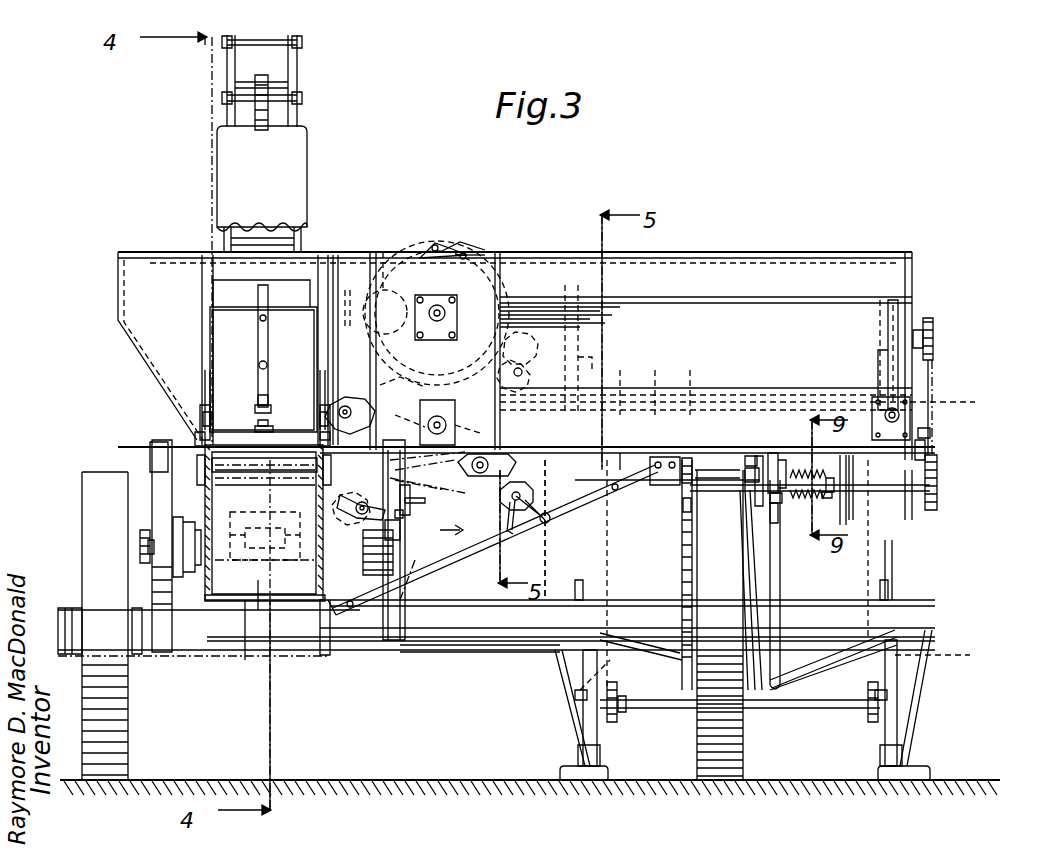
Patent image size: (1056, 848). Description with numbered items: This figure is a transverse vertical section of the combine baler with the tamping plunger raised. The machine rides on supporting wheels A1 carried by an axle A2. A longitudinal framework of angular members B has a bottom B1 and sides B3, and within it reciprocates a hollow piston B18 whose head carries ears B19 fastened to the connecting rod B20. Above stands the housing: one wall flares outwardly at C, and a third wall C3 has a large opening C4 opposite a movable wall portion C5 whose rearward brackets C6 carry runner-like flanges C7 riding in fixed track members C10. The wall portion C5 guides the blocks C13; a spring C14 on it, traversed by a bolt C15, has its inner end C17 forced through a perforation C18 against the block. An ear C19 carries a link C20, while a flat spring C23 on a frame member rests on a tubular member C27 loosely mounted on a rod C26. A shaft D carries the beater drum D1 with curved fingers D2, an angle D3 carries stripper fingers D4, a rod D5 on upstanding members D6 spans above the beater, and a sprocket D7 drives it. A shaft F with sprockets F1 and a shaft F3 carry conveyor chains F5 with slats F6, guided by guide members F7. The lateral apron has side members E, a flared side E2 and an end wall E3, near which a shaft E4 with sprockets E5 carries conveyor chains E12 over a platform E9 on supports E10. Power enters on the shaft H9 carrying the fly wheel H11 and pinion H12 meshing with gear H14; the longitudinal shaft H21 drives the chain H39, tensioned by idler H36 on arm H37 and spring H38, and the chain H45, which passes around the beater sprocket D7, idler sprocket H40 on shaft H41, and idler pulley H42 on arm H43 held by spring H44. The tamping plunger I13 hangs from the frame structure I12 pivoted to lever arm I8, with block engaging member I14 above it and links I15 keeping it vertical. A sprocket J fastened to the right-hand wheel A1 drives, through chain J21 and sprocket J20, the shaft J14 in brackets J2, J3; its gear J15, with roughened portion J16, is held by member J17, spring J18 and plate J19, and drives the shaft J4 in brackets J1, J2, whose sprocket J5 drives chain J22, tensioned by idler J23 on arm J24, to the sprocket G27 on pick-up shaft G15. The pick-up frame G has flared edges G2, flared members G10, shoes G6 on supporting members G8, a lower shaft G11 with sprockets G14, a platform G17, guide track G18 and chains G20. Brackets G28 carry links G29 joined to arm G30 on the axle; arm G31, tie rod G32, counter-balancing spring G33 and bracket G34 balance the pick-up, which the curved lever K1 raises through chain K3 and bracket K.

The supporting wheel A1 is at (745, 762).
The axle A2 is at (330, 655).
The downwardly depending frame structure I12 is at (232, 62).
The lever arm I8 is at (230, 82).
The link I15 is at (230, 106).
The block engaging member I14 is at (265, 112).
The tamping plunger I13 is at (292, 152).
The flared housing wall C is at (120, 296).
The third housing wall C3 is at (180, 258).
The block C13 is at (308, 262).
The opening C4 is at (318, 262).
The movable wall portion C5 is at (218, 322).
The spring C14 is at (268, 337).
The bolt C15 is at (268, 365).
The inner end of spring C17 is at (268, 393).
The perforation C18 is at (270, 405).
The link C20 is at (270, 420).
The ear C19 is at (272, 428).
The bracket C6 is at (208, 384).
The fixed track member C10 is at (202, 416).
The runner-like flange C7 is at (210, 414).
The flat spring member C23 is at (198, 438).
The rod C26 is at (230, 470).
The tubular member C27 is at (150, 446).
The angular frame member B is at (207, 468).
The side B3 is at (207, 480).
The ear B19 is at (240, 528).
The connecting rod B20 is at (278, 595).
The bottom B1 is at (245, 600).
The piston B18 is at (258, 600).
The fly wheel H11 is at (152, 462).
The shaft H9 is at (140, 546).
The driving pinion H12 is at (392, 650).
The beater shaft D is at (440, 310).
The beater drum D1 is at (440, 262).
The curved finger D2 is at (384, 252).
The angle D3 is at (378, 290).
The stripper finger D4 is at (343, 310).
The rod D5 is at (437, 242).
The upstanding member D6 is at (458, 248).
The beater sprocket D7 is at (472, 252).
The shaft F3 is at (347, 412).
The conveyor chain F5 is at (420, 420).
The slat F6 is at (432, 400).
The guide member F7 is at (468, 400).
The shaft F is at (488, 463).
The sprocket F1 is at (447, 484).
The idler sprocket H40 is at (528, 346).
The shaft H41 is at (534, 370).
The gear H14 is at (415, 470).
The spring H38 is at (425, 500).
The chain H39 is at (412, 505).
The chain H45 is at (470, 527).
The idler H36 is at (400, 535).
The idler arm H37 is at (416, 528).
The longitudinal driving shaft H21 is at (385, 520).
The idler pulley H42 is at (522, 496).
The pivoted arm H43 is at (540, 520).
The spring H44 is at (512, 535).
The flared side member E2 is at (860, 270).
The end wall E3 is at (918, 300).
The shaft E4 is at (895, 415).
The sprocket E5 is at (957, 401).
The platform member E9 is at (627, 380).
The support E10 is at (664, 380).
The conveyor chain E12 is at (623, 472).
The side member E is at (619, 468).
The driving sprocket G27 is at (933, 320).
The shaft G15 is at (935, 340).
The chain J22 is at (935, 370).
The idler J23 is at (932, 432).
The pivoted arm J24 is at (927, 450).
The sprocket J5 is at (937, 472).
The bracket J1 is at (884, 494).
The shaft J4 is at (846, 486).
The roughened portion J16 is at (786, 468).
The spring J18 is at (812, 470).
The clutch member J17 is at (780, 500).
The plate J19 is at (826, 498).
The gear J15 is at (787, 519).
The bracket J2 is at (765, 520).
The bracket J3 is at (655, 485).
The sprocket J20 is at (684, 498).
The chain J21 is at (683, 505).
The shaft J14 is at (725, 480).
The sprocket J is at (682, 578).
The bracket G34 is at (745, 458).
The counter-balancing spring G33 is at (745, 478).
The arm G31 is at (750, 555).
The tie rod G32 is at (753, 582).
The lever arm G30 is at (833, 659).
The connecting link G29 is at (660, 650).
The frame member G is at (655, 545).
The flared upper edge G2 is at (933, 576).
The bracket member G28 is at (578, 600).
The conveyor chain G20 is at (575, 694).
The grain contacting member G10 is at (568, 672).
The guide track G18 is at (578, 756).
The supporting member G8 is at (902, 755).
The ground contacting shoe G6 is at (560, 776).
The conveyor shaft G11 is at (818, 710).
The sprocket G14 is at (612, 722).
The platform member G17 is at (625, 712).
The curved lever K1 is at (493, 540).
The chain K3 is at (417, 587).
The bracket K is at (466, 653).